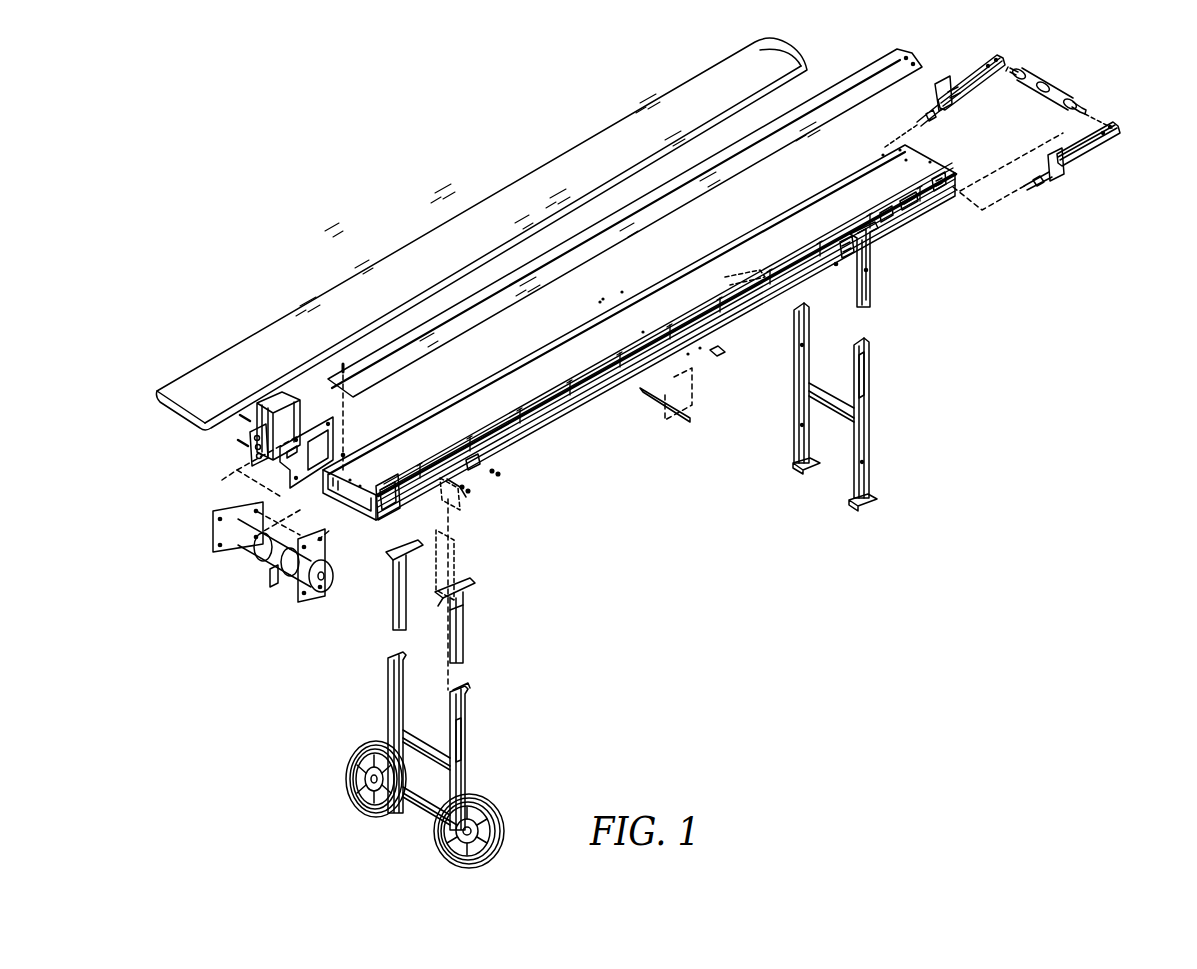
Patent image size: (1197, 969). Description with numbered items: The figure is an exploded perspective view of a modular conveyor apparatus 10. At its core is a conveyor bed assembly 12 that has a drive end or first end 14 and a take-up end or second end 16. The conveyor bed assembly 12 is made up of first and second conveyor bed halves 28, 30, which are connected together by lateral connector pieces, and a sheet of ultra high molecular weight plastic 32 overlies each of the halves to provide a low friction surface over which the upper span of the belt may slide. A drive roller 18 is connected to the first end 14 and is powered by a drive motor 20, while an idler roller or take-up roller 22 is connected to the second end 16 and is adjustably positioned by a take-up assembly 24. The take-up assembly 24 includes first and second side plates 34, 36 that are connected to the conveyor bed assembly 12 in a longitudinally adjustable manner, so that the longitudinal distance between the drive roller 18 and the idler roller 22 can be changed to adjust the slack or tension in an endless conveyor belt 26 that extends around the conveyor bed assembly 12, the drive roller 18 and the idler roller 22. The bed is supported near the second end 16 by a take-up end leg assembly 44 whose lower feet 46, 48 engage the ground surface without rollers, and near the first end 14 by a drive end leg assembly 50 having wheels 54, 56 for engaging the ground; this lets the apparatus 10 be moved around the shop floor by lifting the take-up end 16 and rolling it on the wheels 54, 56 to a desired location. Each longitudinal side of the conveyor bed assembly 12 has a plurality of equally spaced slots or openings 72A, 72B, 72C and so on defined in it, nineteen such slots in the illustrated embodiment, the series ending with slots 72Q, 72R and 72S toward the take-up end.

The modular conveyor apparatus 10 is at (345, 158).
The conveyor bed assembly 12 is at (639, 332).
The first end 14 is at (276, 534).
The second end 16 is at (1011, 137).
The drive roller 18 is at (277, 548).
The drive motor 20 is at (325, 575).
The idler roller 22 is at (1040, 82).
The take-up assembly 24 is at (1011, 109).
The endless conveyor belt 26 is at (712, 85).
The first conveyor bed half 28 is at (692, 278).
The second conveyor bed half 30 is at (580, 374).
The sheet of ultra high molecular weight plastic 32 is at (880, 80).
The first side plate 34 is at (957, 75).
The second side plate 36 is at (1090, 148).
The take-up end leg assembly 44 is at (844, 431).
The lower foot 46 is at (855, 500).
The lower foot 48 is at (797, 467).
The drive end leg assembly 50 is at (429, 704).
The wheel 54 is at (497, 842).
The wheel 56 is at (366, 805).
The slot 72A is at (447, 492).
The slot 72B is at (450, 479).
The slot 72C is at (475, 460).
The slot 72Q is at (844, 252).
The slot 72R is at (890, 234).
The slot 72S is at (908, 210).